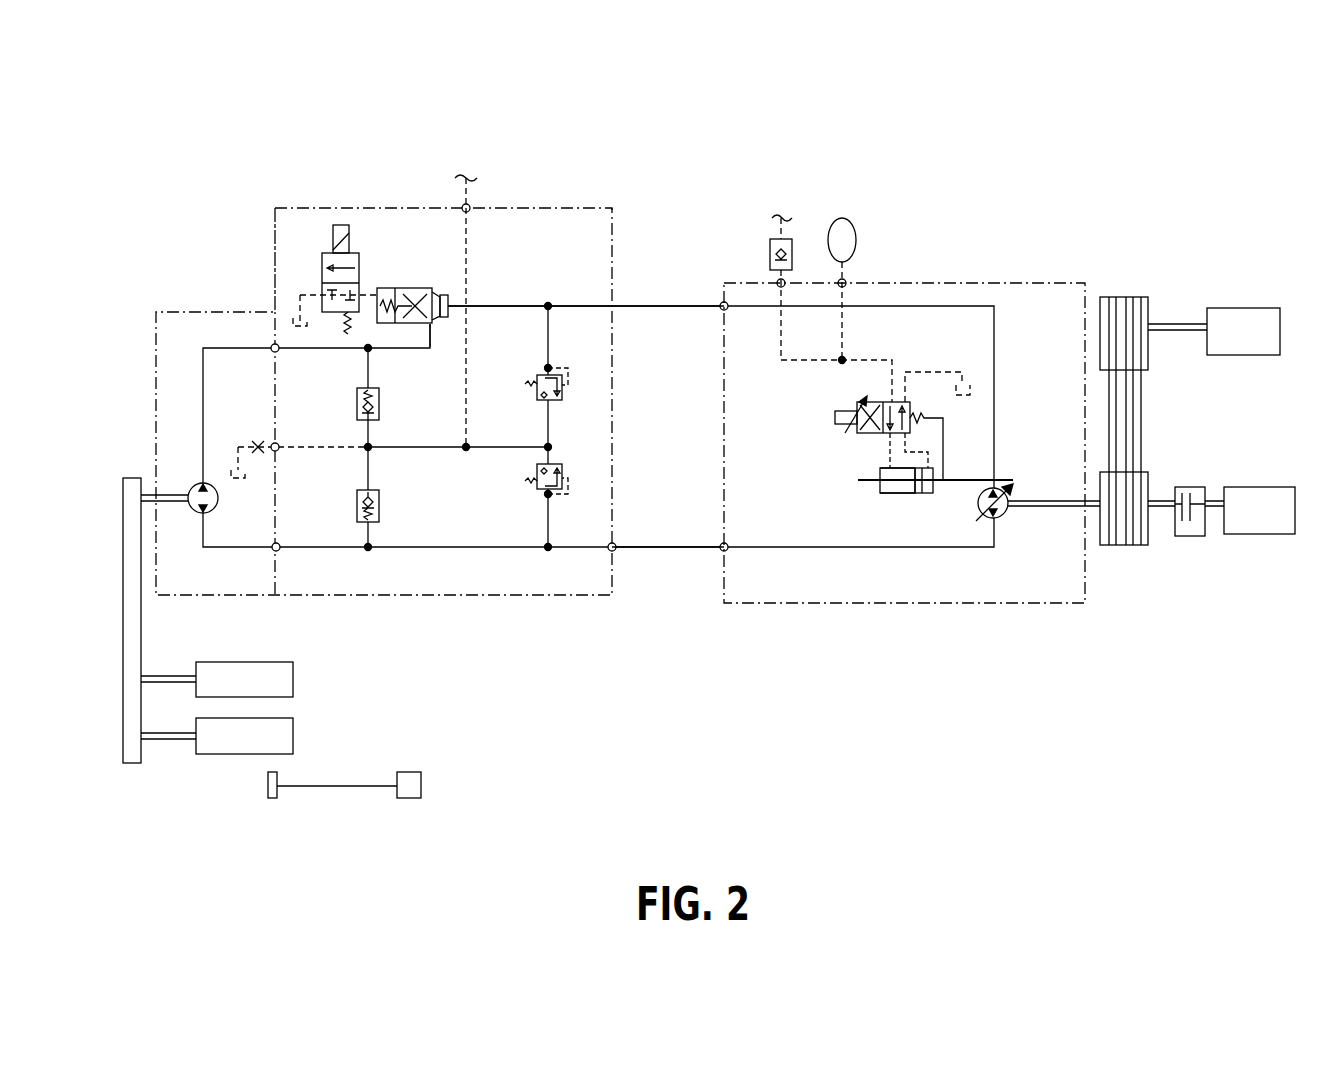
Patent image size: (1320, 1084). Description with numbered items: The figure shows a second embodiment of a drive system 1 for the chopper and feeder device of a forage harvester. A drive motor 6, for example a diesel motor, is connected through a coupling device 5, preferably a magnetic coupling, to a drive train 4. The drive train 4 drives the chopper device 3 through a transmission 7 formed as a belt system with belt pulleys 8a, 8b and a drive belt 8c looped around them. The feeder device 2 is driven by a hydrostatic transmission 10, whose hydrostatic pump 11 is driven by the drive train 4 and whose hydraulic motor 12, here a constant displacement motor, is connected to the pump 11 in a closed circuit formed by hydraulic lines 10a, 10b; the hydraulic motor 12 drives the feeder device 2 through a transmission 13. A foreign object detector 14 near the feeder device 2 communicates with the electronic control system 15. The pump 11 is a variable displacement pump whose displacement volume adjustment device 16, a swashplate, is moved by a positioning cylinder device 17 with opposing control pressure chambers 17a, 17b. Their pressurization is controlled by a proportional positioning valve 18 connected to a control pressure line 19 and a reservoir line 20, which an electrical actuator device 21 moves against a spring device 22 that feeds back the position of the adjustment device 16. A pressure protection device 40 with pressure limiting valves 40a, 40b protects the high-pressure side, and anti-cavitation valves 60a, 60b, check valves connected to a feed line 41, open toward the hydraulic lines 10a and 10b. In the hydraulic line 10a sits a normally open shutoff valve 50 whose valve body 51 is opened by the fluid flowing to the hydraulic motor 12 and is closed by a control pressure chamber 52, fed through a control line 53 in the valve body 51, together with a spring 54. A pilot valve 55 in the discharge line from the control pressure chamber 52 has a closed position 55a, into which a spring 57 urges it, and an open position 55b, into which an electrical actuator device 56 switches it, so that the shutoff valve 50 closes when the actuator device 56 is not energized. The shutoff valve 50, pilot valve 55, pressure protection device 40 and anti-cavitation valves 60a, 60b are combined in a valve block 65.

The drive system 1 is at (1069, 185).
The feeder device 2 is at (285, 737).
The chopper device 3 is at (1243, 321).
The drive train 4 is at (1165, 426).
The coupling device 5 is at (1190, 538).
The drive motor 6 is at (1256, 521).
The transmission 7 is at (1131, 290).
The belt pulley 8a is at (1141, 481).
The belt pulley 8b is at (1141, 306).
The drive belt 8c is at (1137, 402).
The hydrostatic transmission 10 is at (594, 467).
The hydraulic line 10a is at (677, 305).
The hydraulic line 10b is at (675, 550).
The hydrostatic pump 11 is at (1038, 491).
The hydraulic motor 12 is at (193, 483).
The transmission 13 is at (134, 641).
The foreign object detector 14 is at (268, 788).
The electronic control system 15 is at (410, 778).
The displacement volume adjustment device 16 is at (1012, 486).
The positioning cylinder device 17 is at (917, 565).
The control pressure chamber 17a is at (898, 488).
The control pressure chamber 17b is at (925, 488).
The positioning valve 18 is at (896, 422).
The control pressure line 19 is at (792, 357).
The reservoir line 20 is at (925, 372).
The electrical actuator device 21 is at (835, 418).
The spring device 22 is at (916, 423).
The pressure protection device 40 is at (601, 513).
The pressure limiting valve 40a is at (565, 394).
The pressure limiting valve 40b is at (562, 470).
The feed line 41 is at (470, 187).
The shutoff valve 50 is at (462, 248).
The valve body 51 is at (405, 287).
The control pressure chamber 52 is at (389, 300).
The control line 53 is at (430, 286).
The spring 54 is at (385, 328).
The pilot valve 55 is at (286, 249).
The closed position 55a is at (322, 295).
The open position 55b is at (322, 278).
The electrical actuator device 56 is at (343, 226).
The spring 57 is at (343, 328).
The anti-cavitation valve 60a is at (357, 408).
The anti-cavitation valve 60b is at (357, 507).
The valve block 65 is at (614, 205).